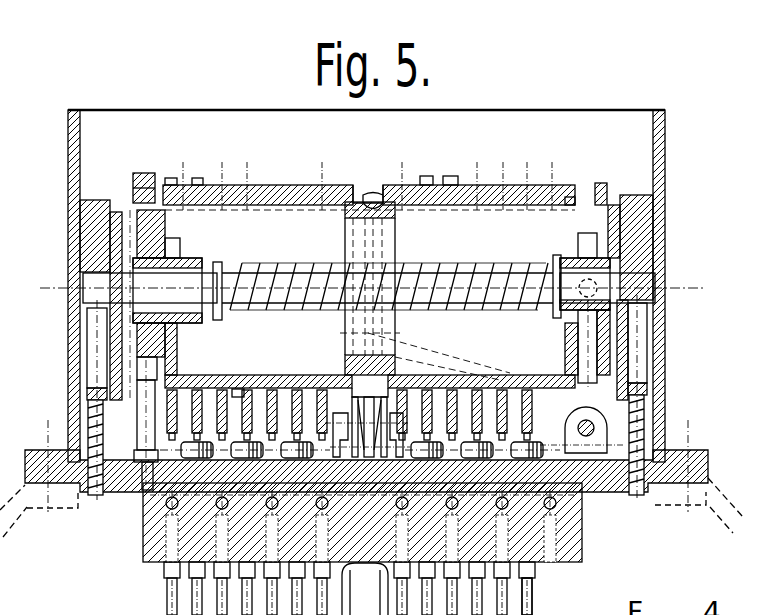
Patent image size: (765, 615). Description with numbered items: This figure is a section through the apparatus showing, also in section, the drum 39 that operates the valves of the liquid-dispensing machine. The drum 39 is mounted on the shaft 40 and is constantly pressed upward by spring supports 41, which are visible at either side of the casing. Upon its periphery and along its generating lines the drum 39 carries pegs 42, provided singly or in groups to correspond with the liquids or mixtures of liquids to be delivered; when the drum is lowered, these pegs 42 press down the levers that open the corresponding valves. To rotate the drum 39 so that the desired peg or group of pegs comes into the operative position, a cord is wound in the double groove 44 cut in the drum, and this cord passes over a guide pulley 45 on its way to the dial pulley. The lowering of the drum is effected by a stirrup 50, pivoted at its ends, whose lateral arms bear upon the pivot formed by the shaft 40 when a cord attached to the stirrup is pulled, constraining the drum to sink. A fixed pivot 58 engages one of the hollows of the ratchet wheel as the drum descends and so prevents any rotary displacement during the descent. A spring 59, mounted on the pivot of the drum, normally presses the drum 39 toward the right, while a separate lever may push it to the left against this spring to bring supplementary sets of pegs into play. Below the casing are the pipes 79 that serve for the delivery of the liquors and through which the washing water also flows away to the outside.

The drum 39 is at (533, 185).
The shaft 40 is at (88, 288).
The spring supports 41 is at (97, 347).
The pegs 42 is at (258, 177).
The double groove 44 is at (368, 192).
The guide pulley 45 is at (370, 405).
The stirrup 50 is at (138, 238).
The fixed pivot 58 is at (143, 427).
The spring 59 is at (477, 263).
The pipes 79 is at (553, 599).